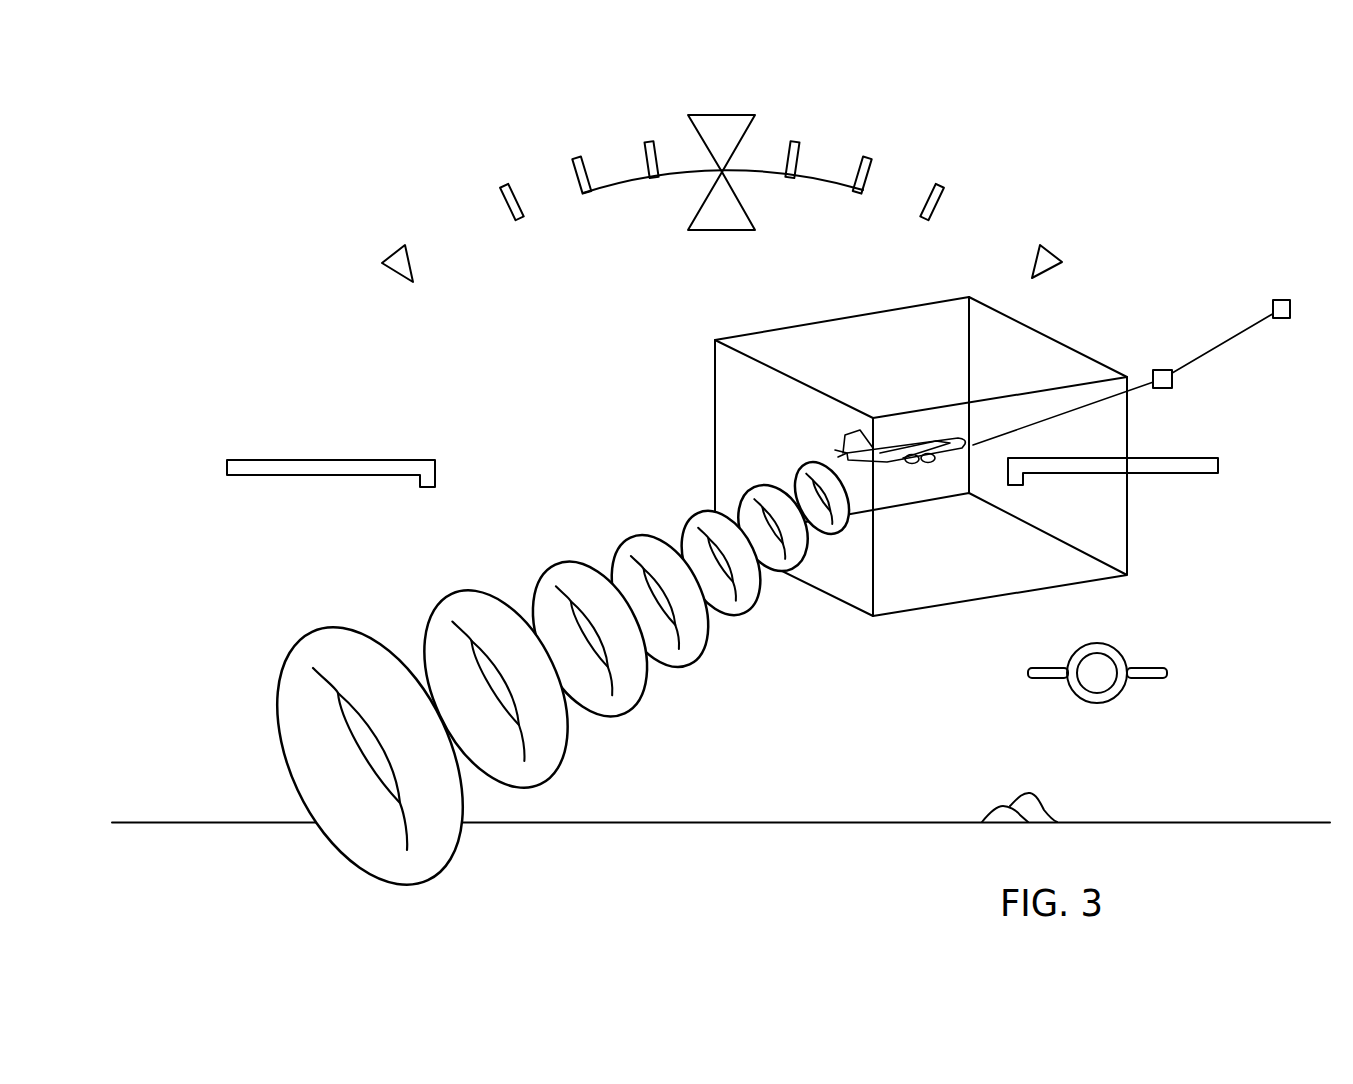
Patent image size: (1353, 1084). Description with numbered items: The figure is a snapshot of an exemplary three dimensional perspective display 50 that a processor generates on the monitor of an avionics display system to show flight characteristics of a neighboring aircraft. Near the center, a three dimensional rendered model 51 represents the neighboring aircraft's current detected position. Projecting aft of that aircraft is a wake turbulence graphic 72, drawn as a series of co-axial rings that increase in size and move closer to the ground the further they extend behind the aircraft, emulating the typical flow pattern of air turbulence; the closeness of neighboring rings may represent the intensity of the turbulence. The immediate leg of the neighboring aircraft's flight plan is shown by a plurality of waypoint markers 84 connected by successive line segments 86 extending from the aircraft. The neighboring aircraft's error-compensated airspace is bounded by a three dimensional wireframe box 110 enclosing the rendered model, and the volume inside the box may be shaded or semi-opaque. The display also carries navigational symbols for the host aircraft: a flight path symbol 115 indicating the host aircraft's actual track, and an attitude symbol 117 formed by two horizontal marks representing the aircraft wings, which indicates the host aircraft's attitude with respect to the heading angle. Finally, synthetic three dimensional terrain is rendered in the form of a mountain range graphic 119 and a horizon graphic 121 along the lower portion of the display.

The three dimensional perspective display 50 is at (306, 160).
The three dimensional rendered model 51 is at (900, 463).
The wake turbulence graphic 72 is at (463, 598).
The waypoint markers 84 is at (1162, 370).
The line segments 86 is at (1228, 342).
The three dimensional wireframe box 110 is at (778, 422).
The flight path symbol 115 is at (1153, 667).
The attitude symbol 117 is at (333, 463).
The mountain range graphic 119 is at (1035, 805).
The horizon graphic 121 is at (795, 822).